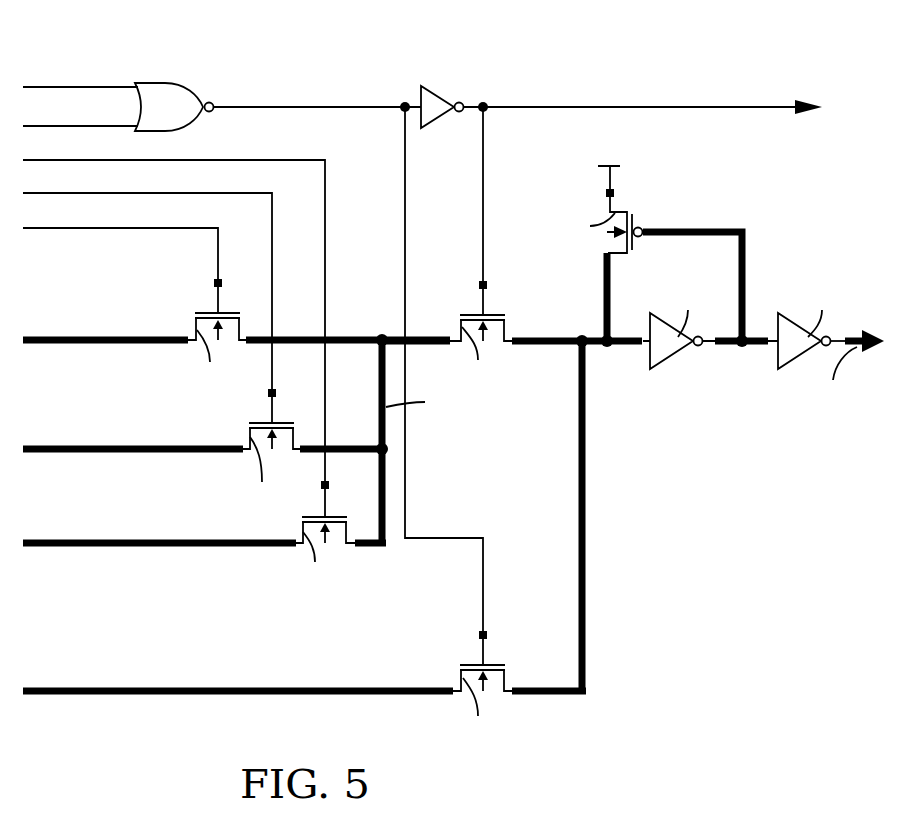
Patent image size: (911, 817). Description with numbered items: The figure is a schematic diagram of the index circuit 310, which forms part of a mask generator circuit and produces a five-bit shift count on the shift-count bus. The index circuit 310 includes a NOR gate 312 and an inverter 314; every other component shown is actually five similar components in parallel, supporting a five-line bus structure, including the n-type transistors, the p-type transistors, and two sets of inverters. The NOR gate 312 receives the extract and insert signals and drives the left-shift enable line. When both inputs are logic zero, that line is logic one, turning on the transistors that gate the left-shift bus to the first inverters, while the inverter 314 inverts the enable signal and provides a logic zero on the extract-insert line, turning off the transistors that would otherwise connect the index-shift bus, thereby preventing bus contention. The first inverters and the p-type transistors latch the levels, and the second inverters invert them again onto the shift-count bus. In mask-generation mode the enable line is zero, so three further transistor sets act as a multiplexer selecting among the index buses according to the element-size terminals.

The index circuit 310 is at (570, 60).
The NOR gate 312 is at (187, 117).
The inverter 314 is at (433, 95).